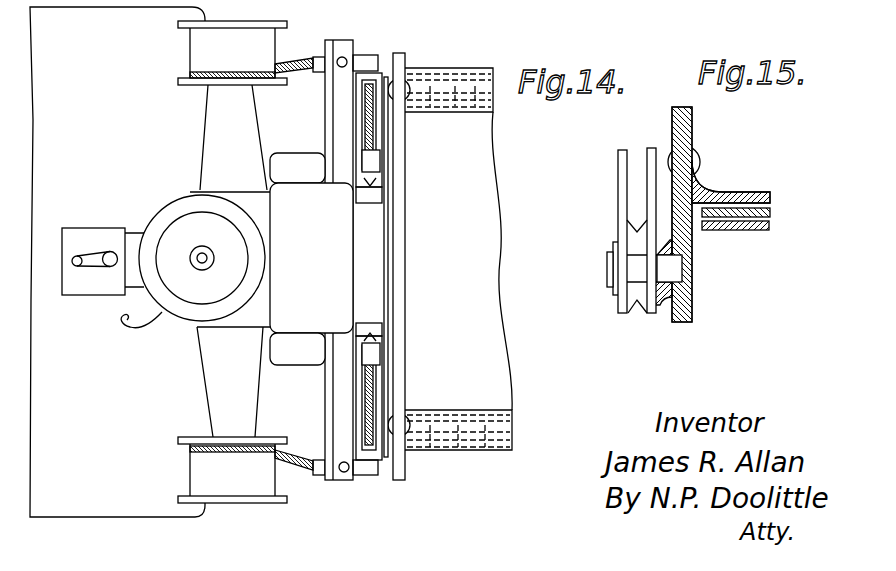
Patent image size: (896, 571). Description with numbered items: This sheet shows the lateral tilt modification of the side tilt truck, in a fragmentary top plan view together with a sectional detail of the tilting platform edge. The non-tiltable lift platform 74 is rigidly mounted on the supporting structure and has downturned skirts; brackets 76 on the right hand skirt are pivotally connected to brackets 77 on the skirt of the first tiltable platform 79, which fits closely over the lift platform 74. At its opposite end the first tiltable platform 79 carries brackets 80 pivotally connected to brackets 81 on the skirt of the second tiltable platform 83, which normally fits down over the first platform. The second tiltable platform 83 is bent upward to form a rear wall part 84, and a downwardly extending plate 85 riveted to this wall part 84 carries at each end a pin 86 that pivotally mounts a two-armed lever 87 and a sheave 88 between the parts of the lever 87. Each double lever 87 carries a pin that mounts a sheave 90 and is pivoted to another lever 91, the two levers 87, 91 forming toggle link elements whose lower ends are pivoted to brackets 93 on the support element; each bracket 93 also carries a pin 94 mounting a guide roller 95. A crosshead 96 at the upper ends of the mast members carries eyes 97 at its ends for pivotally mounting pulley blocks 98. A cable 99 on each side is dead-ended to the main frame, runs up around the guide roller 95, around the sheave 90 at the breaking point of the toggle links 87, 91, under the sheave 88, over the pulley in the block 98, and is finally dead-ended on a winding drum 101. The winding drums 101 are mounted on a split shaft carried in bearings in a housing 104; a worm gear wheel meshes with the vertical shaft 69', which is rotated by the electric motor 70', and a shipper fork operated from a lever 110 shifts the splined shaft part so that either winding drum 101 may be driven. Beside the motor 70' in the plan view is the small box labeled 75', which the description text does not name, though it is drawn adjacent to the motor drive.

In FIG. 14, the winding drum 101 is at (262, 42).
In FIG. 14, the cable 99 is at (213, 77).
In FIG. 14, the eye 97 is at (343, 57).
In FIG. 14, the pulley block 98 is at (366, 58).
In FIG. 14, the bracket 77 is at (452, 80).
In FIG. 14, the bracket 76 is at (468, 112).
In FIG. 14, the vertical shaft 69' is at (188, 205).
In FIG. 14, the electric motor 70' is at (191, 242).
In FIG. 14, the bearing box 75' is at (103, 242).
In FIG. 14, the lever 110 is at (127, 328).
In FIG. 14, the housing 104 is at (223, 357).
In FIG. 14, the two-armed lever 87 is at (375, 115).
In FIG. 15, the two-armed lever 87 is at (650, 202).
In FIG. 14, the sheave 90 is at (375, 132).
In FIG. 14, the pin 94 is at (450, 170).
In FIG. 14, the guide roller 95 is at (368, 173).
In FIG. 14, the bracket 93 is at (368, 203).
In FIG. 14, the crosshead 96 is at (333, 240).
In FIG. 14, the rear wall part 84 is at (462, 290).
In FIG. 15, the rear wall part 84 is at (760, 127).
In FIG. 14, the lever 91 is at (383, 330).
In FIG. 14, the second tiltable platform 83 is at (505, 323).
In FIG. 14, the bracket 80 is at (458, 427).
In FIG. 14, the bracket 81 is at (472, 450).
In FIG. 15, the plate 85 is at (730, 197).
In FIG. 15, the first tiltable platform 79 is at (770, 212).
In FIG. 15, the lift platform 74 is at (782, 294).
In FIG. 15, the pin 86 is at (683, 270).
In FIG. 15, the sheave 88 is at (638, 310).